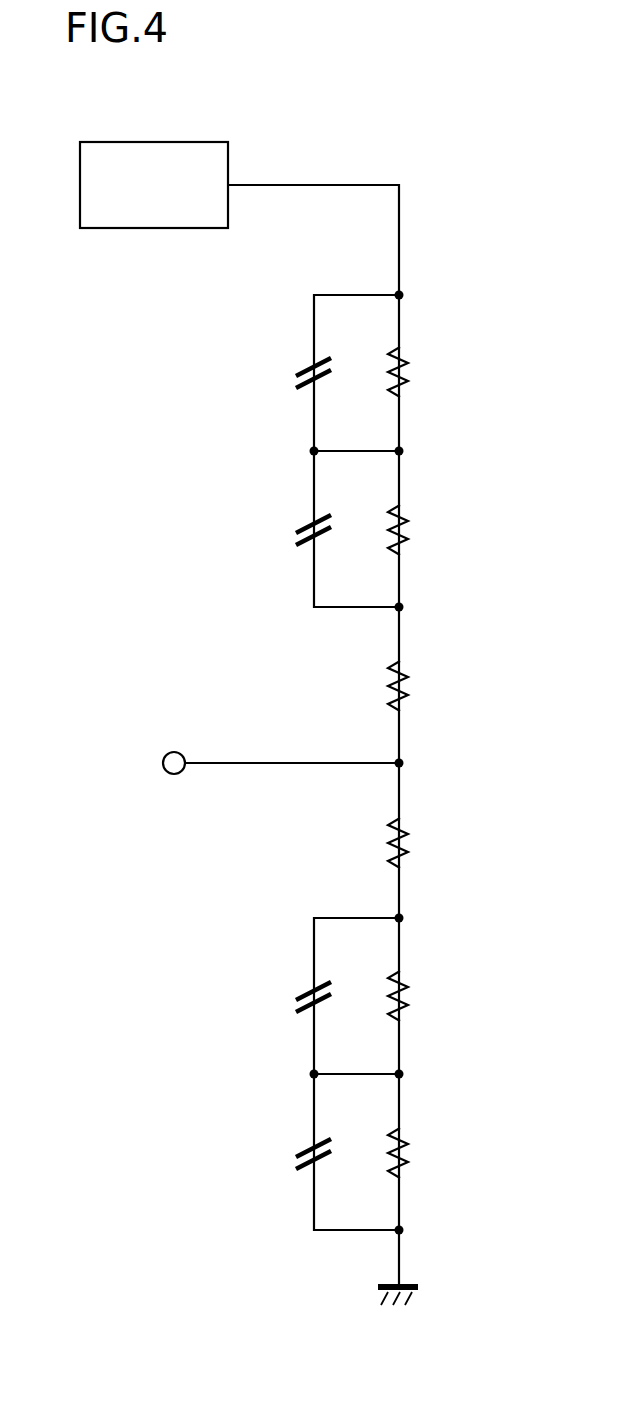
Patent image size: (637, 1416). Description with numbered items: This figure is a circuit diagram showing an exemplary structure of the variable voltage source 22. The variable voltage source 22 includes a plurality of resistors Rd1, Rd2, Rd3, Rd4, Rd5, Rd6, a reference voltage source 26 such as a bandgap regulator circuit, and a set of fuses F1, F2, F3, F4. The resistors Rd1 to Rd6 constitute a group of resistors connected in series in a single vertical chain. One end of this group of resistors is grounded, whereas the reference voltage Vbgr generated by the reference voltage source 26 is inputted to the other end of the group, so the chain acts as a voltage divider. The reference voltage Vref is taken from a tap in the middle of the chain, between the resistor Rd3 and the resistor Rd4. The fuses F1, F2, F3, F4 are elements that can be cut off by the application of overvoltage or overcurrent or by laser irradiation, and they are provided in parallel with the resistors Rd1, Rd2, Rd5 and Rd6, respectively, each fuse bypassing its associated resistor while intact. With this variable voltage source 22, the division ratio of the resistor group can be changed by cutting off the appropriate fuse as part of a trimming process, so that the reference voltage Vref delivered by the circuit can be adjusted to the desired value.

The reference voltage source 26 is at (155, 142).
The variable voltage source 22 is at (275, 724).
The resistor Rd1 is at (429, 372).
The resistor Rd2 is at (429, 530).
The resistor Rd3 is at (429, 686).
The resistor Rd4 is at (429, 843).
The resistor Rd5 is at (429, 996).
The resistor Rd6 is at (429, 1153).
The fuse F1 is at (294, 374).
The fuse F2 is at (294, 531).
The fuse F3 is at (294, 998).
The fuse F4 is at (294, 1155).
The reference voltage Vbgr is at (313, 164).
The reference voltage Vref is at (239, 765).